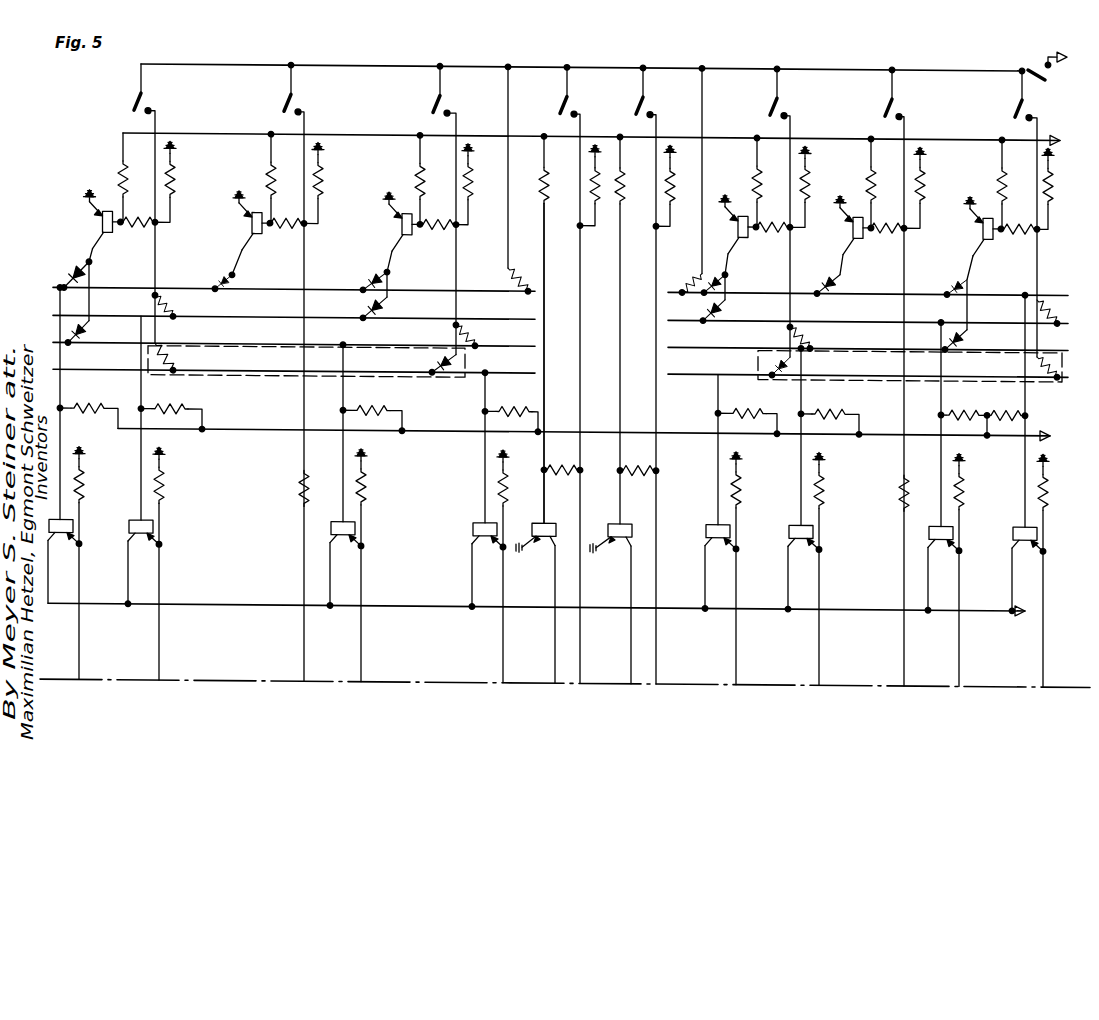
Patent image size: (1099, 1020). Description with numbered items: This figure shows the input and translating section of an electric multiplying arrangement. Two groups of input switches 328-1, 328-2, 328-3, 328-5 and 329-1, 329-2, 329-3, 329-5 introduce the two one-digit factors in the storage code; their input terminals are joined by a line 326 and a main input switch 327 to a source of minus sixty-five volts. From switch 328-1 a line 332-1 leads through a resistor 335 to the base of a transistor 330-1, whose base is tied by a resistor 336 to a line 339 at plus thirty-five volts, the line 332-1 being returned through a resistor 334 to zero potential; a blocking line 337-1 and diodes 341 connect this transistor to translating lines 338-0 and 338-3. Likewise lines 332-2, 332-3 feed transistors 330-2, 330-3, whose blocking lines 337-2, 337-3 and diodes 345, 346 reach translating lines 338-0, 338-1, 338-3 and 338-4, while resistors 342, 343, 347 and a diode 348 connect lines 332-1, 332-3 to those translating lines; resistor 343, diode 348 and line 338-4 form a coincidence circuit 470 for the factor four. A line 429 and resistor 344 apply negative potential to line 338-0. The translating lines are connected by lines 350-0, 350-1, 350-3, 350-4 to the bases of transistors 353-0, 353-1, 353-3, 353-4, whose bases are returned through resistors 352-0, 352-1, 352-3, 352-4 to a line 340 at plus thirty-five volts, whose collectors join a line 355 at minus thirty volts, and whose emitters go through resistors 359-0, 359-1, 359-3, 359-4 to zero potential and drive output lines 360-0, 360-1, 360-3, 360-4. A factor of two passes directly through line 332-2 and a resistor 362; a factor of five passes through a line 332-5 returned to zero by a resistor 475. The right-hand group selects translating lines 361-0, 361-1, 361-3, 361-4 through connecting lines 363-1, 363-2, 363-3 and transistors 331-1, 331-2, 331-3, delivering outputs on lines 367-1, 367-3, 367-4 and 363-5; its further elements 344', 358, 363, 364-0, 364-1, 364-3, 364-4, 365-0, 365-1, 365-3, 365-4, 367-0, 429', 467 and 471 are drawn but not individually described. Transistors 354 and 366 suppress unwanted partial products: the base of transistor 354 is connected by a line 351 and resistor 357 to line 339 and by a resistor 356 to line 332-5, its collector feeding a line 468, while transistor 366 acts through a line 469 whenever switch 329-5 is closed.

The line 326 is at (820, 62).
The main input switch 327 is at (1036, 72).
The input switch 328-1 is at (134, 102).
The input switch 328-2 is at (284, 102).
The input switch 328-3 is at (433, 102).
The input switch 328-5 is at (561, 102).
The input switch 329-1 is at (1014, 100).
The input switch 329-2 is at (884, 101).
The input switch 329-3 is at (769, 101).
The input switch 329-5 is at (638, 102).
The transistor 330-1 is at (111, 219).
The transistor 330-2 is at (278, 192).
The transistor 330-3 is at (428, 193).
The transistor 331-1 is at (998, 247).
The transistor 331-2 is at (870, 219).
The transistor 331-3 is at (755, 232).
The line 332-1 is at (156, 126).
The line 332-2 is at (305, 126).
The line 332-3 is at (457, 126).
The line 332-5 is at (581, 126).
The resistor 334 is at (174, 170).
The resistor 335 is at (137, 217).
The resistor 336 is at (120, 174).
The blocking line 337-1 is at (93, 251).
The blocking line 337-2 is at (243, 251).
The blocking line 337-3 is at (393, 251).
The translating line 338-0 is at (225, 290).
The translating line 338-1 is at (225, 318).
The translating line 338-3 is at (225, 345).
The translating line 338-4 is at (225, 372).
The line 339 is at (122, 136).
The line 340 is at (660, 430).
The diodes 341 is at (79, 267).
The resistor 342 is at (171, 307).
The resistor 343 is at (171, 357).
The resistor 344 is at (526, 273).
The resistor 344' is at (684, 274).
The diode 345 is at (228, 267).
The diode 346 is at (378, 266).
The resistor 347 is at (470, 332).
The diode 348 is at (445, 359).
The line 350-0 is at (62, 435).
The line 350-1 is at (144, 435).
The line 350-3 is at (346, 435).
The line 350-4 is at (487, 435).
The line 351 is at (546, 345).
The resistor 352-0 is at (101, 403).
The resistor 352-1 is at (176, 403).
The resistor 352-3 is at (374, 408).
The resistor 352-4 is at (513, 409).
The transistor 353-0 is at (71, 561).
The transistor 353-1 is at (150, 563).
The transistor 353-3 is at (352, 565).
The transistor 353-4 is at (494, 566).
The transistor 354 is at (551, 519).
The line 355 is at (220, 602).
The resistor 356 is at (560, 456).
The resistor 357 is at (546, 184).
The resistor 358 is at (645, 330).
The resistor 359-0 is at (85, 485).
The resistor 359-1 is at (186, 496).
The resistor 359-3 is at (367, 489).
The resistor 359-4 is at (525, 498).
The line 360-0 is at (79, 648).
The line 360-1 is at (162, 648).
The line 360-3 is at (362, 648).
The line 360-4 is at (526, 615).
The translating line 361-0 is at (837, 289).
The translating line 361-1 is at (837, 317).
The translating line 361-3 is at (837, 344).
The translating line 361-4 is at (837, 371).
The resistor 362 is at (300, 481).
The resistor 363 is at (902, 478).
The connecting line 363-1 is at (1036, 141).
The connecting line 363-2 is at (905, 123).
The connecting line 363-3 is at (791, 124).
The line 363-5 is at (657, 126).
The line 364-0 is at (1012, 397).
The line 364-1 is at (943, 435).
The line 364-3 is at (803, 435).
The line 364-4 is at (720, 435).
The transistor 365-0 is at (1033, 570).
The transistor 365-1 is at (951, 569).
The transistor 365-3 is at (809, 568).
The transistor 365-4 is at (726, 568).
The transistor 366 is at (618, 519).
The output line 367-0 is at (1042, 668).
The output line 367-1 is at (960, 646).
The output line 367-3 is at (820, 647).
The output line 367-4 is at (737, 647).
The line 429 is at (527, 168).
The line 429' is at (720, 170).
The resistor 467 is at (624, 497).
The line 468 is at (555, 590).
The line 469 is at (630, 590).
The coincidence circuit 470 is at (468, 361).
The diode 471 is at (757, 362).
The resistor 475 is at (601, 185).